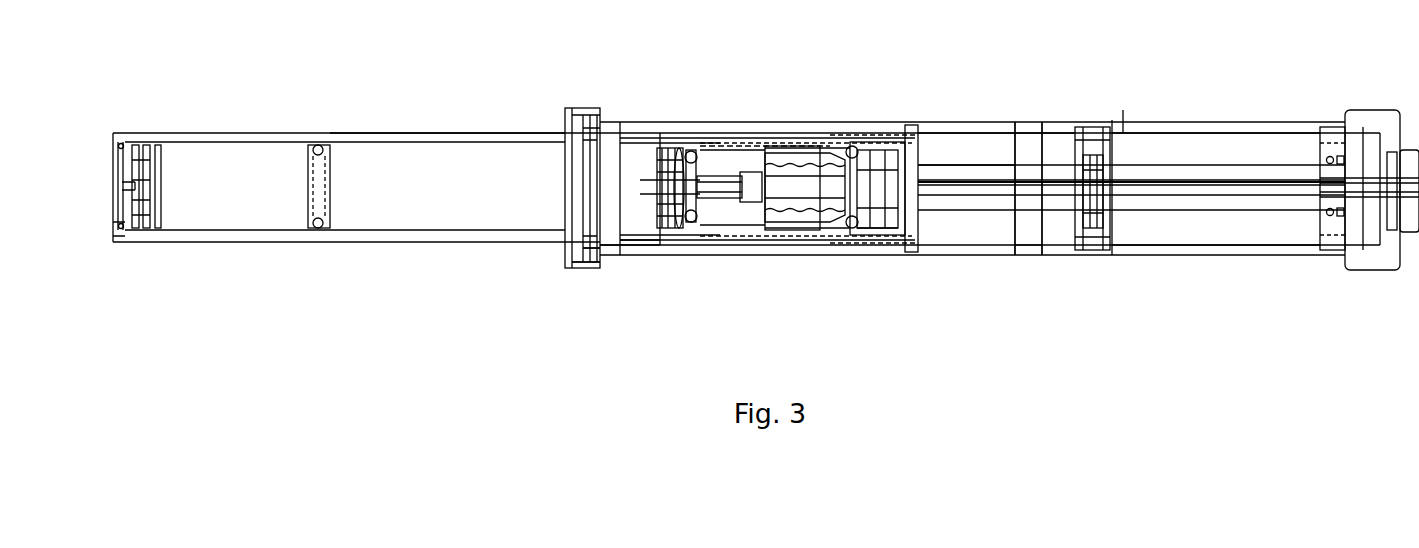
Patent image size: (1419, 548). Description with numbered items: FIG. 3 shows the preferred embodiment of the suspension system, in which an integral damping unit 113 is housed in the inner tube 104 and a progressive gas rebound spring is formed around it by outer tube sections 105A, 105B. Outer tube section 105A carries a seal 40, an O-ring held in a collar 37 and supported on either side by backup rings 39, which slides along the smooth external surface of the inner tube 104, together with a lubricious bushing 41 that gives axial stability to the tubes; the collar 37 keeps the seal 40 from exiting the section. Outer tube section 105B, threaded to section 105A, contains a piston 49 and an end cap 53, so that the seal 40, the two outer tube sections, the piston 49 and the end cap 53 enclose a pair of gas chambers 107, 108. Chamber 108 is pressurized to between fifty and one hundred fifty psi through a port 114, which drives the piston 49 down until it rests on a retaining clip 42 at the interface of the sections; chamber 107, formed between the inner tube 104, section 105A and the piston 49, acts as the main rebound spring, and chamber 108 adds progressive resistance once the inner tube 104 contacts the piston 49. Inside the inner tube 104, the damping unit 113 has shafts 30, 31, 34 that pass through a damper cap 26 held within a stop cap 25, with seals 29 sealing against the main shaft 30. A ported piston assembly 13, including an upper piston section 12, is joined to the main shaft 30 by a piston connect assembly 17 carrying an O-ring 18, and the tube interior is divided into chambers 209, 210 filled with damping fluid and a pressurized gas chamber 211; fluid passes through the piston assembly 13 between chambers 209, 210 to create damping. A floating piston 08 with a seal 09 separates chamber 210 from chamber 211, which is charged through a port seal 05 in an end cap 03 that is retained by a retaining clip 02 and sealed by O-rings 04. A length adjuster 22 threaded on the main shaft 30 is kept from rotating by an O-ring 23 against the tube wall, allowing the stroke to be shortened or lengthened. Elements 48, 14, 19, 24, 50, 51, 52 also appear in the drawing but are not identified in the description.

The retaining clip 02 is at (122, 140).
The end cap 03 is at (125, 228).
The O-rings 04 is at (150, 142).
The port seal 05 is at (158, 170).
The floating piston 08 is at (307, 150).
The seal 09 is at (317, 148).
The inner tube 104 is at (447, 134).
The gas chamber 211 is at (232, 185).
The chamber 210 is at (457, 188).
The backup rings 39 is at (590, 108).
The collar 37 is at (582, 267).
The seal 40 is at (583, 250).
The lubricious bushing 41 is at (636, 242).
The outer tube section 105A is at (627, 256).
The shaft 48 is at (652, 182).
The ported piston assembly 13 is at (668, 150).
The rollers 14 is at (692, 151).
The upper piston section 12 is at (697, 158).
The O-ring 18 is at (702, 162).
The piston connect assembly 17 is at (740, 168).
The guide 19 is at (706, 152).
The chamber 209 is at (698, 143).
The O-ring 23 is at (756, 138).
The length adjuster 22 is at (801, 152).
The damping unit 113 is at (790, 150).
The rollers 24 is at (858, 148).
The damper cap 26 is at (886, 146).
The seals 29 is at (886, 240).
The stop cap 25 is at (918, 135).
The main shaft 30 is at (984, 164).
The housing tube 107 is at (955, 147).
The shaft 31 is at (1032, 173).
The shaft 34 is at (1029, 252).
The retaining clip 42 is at (1078, 128).
The piston 49 is at (1078, 251).
The bearing ring 50 is at (1096, 251).
The bearing ring 51 is at (1103, 251).
The gas chamber 108 is at (1213, 150).
The outer tube section 105B is at (1184, 252).
The end flange 52 is at (1323, 216).
The end cap 53 is at (1327, 234).
The port 114 is at (1357, 132).